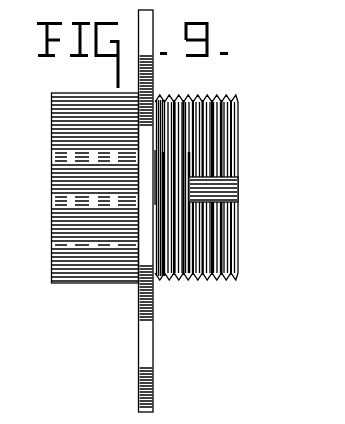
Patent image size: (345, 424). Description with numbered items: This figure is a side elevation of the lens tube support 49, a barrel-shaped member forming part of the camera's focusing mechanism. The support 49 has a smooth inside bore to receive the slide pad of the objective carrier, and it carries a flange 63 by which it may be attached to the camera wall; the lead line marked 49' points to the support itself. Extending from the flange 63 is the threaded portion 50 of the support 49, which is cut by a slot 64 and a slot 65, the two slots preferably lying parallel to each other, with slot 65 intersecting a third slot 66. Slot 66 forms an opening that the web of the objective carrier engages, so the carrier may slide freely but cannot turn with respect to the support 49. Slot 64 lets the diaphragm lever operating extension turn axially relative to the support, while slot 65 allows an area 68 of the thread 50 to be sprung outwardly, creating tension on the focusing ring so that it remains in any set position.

The support 49 is at (79, 188).
The inner sleeve 49' is at (126, 177).
The threaded portion 50 is at (198, 97).
The flange 63 is at (146, 342).
The slot 64 is at (163, 281).
The slot 65 is at (200, 280).
The slot 66 is at (225, 193).
The area of the thread 68 is at (217, 233).